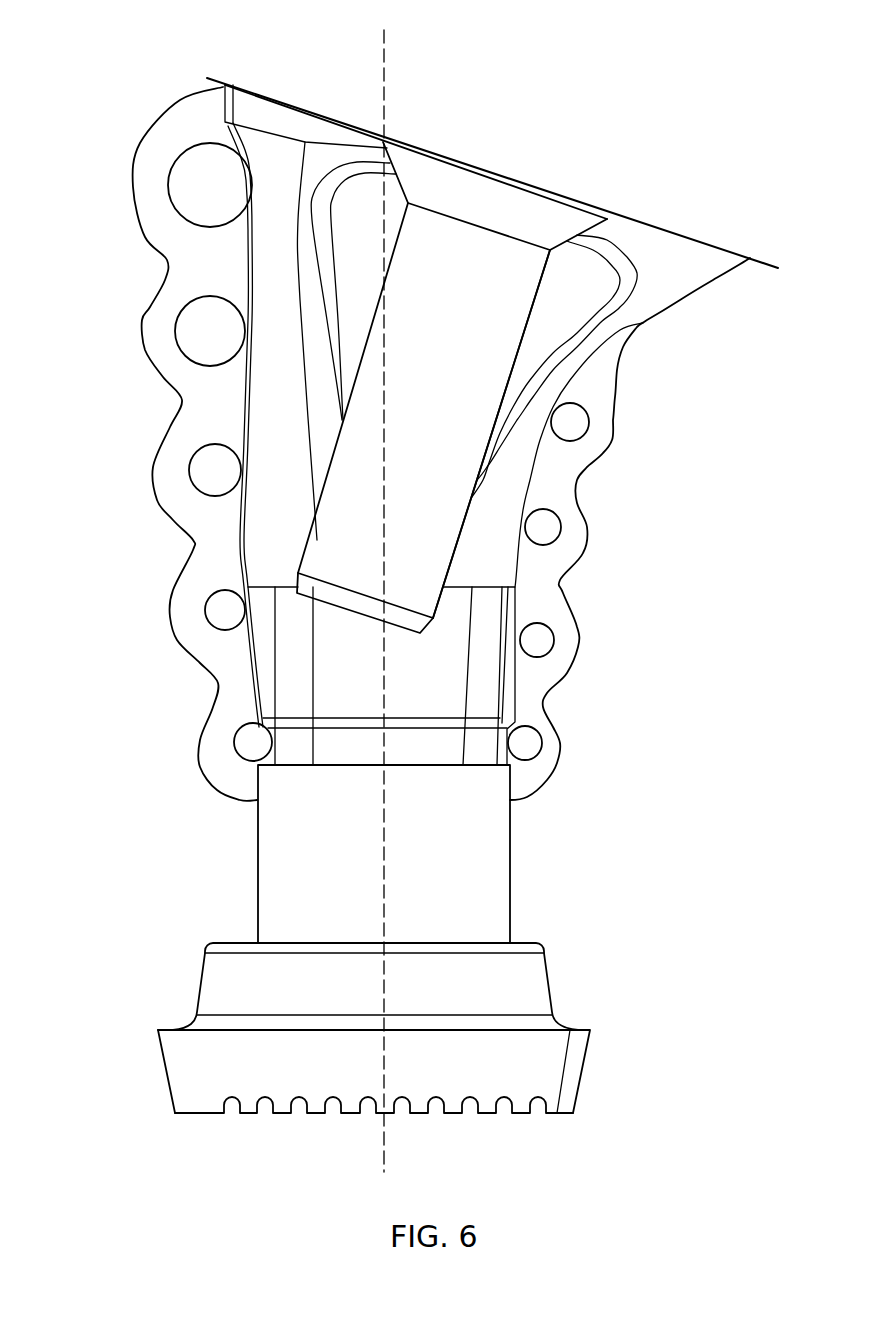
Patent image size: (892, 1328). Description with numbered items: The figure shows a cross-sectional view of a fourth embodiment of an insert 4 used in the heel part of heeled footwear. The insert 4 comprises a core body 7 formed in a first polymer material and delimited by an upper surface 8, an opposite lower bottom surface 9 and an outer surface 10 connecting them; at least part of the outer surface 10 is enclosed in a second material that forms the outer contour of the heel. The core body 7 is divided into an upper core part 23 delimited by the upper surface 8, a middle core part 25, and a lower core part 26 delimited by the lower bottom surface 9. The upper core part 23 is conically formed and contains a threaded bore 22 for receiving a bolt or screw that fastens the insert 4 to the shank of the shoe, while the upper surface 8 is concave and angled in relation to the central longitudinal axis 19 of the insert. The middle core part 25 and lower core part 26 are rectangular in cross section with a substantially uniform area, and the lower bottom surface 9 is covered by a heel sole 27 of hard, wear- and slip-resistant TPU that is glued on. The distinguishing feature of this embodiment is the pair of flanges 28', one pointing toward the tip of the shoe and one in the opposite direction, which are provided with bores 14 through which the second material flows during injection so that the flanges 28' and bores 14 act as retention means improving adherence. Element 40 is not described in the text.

The insert 4 is at (744, 49).
The core body 7 is at (332, 648).
The upper surface 8 is at (672, 234).
The lower bottom surface 9 is at (203, 1030).
The outer surface 10 is at (190, 411).
The bores 14 is at (250, 742).
The central longitudinal axis 19 is at (385, 1147).
The threaded bore 22 is at (540, 280).
The upper core part 23 is at (297, 220).
The middle core part 25 is at (210, 437).
The lower core part 26 is at (275, 845).
The heel sole 27 is at (555, 1062).
The flanges 28' is at (366, 634).
The airfoil 40 is at (388, 142).